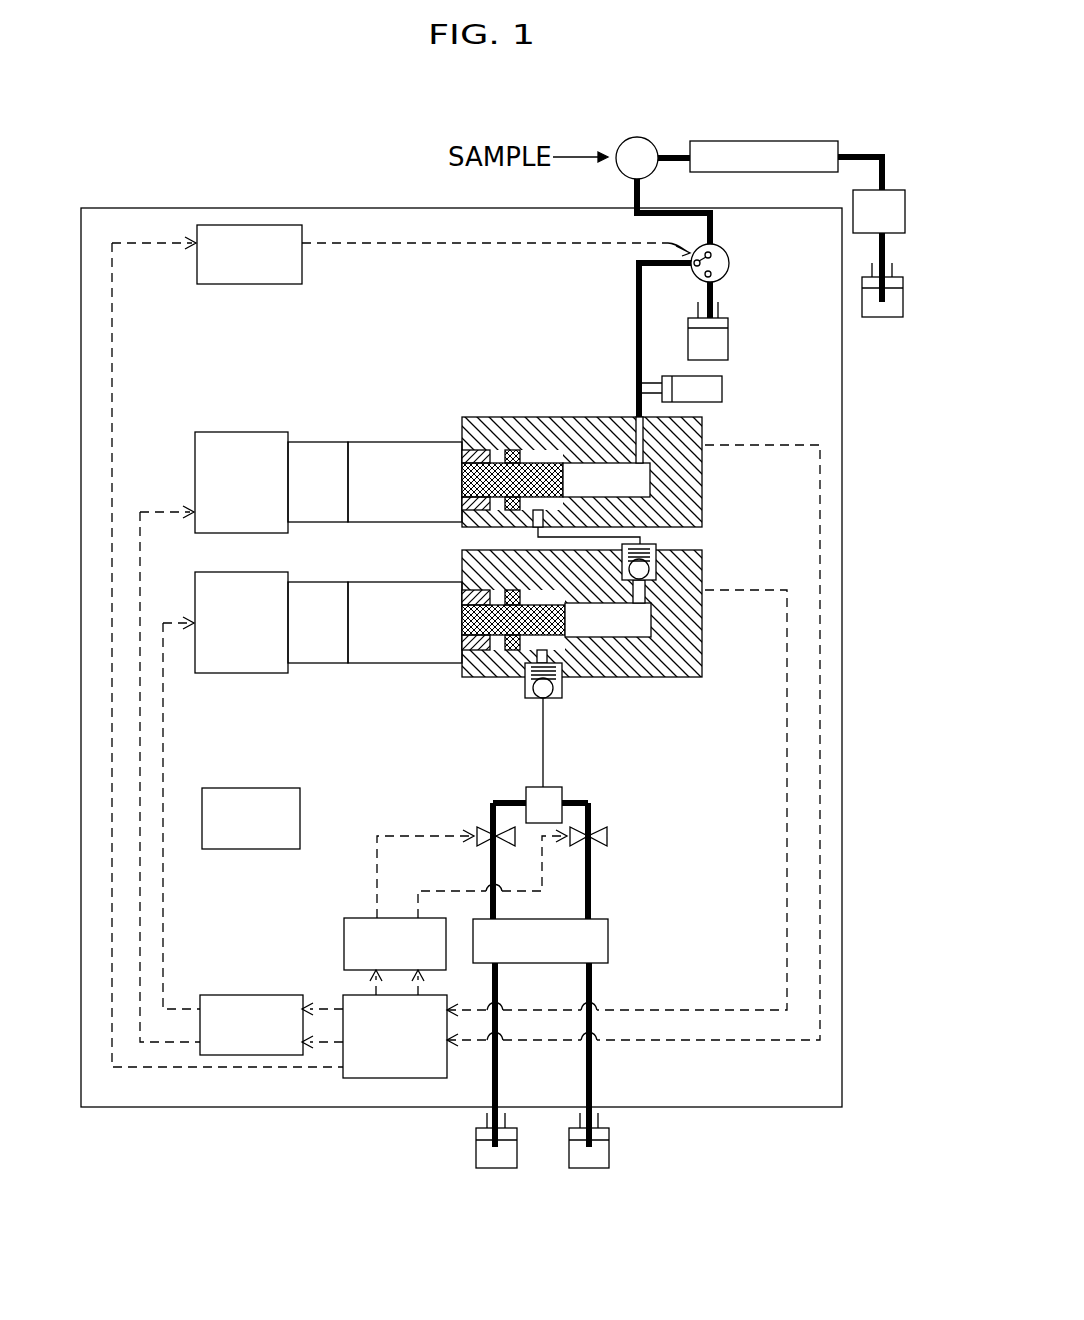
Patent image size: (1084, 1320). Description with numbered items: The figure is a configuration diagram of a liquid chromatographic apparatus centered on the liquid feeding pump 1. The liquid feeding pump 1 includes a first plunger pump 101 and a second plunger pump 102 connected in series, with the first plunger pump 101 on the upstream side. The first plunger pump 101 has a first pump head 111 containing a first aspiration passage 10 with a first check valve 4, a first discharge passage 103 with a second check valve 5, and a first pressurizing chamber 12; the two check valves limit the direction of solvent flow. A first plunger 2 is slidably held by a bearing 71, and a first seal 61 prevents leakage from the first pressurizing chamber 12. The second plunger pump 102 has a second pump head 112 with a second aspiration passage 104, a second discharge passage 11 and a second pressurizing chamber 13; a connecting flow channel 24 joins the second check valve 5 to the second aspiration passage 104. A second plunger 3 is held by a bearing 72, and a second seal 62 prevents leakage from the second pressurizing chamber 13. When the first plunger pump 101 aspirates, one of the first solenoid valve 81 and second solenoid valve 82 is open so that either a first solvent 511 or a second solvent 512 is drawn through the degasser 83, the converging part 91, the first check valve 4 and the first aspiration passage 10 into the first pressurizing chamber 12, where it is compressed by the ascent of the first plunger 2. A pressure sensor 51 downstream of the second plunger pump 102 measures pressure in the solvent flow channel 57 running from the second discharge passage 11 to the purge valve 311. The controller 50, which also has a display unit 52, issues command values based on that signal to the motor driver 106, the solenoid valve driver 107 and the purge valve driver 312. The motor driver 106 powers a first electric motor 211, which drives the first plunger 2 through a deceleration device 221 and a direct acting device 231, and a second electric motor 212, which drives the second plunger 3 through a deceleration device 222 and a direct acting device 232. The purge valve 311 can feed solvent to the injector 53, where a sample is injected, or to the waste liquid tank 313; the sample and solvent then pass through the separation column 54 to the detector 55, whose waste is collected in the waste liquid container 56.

The liquid feeding pump 1 is at (126, 214).
The injector 53 is at (637, 137).
The separation column 54 is at (762, 142).
The detector 55 is at (887, 208).
The waste liquid container 56 is at (882, 320).
The solvent flow channel 57 is at (634, 320).
The purge valve 311 is at (722, 268).
The purge valve driver 312 is at (229, 284).
The waste liquid tank 313 is at (728, 325).
The pressure sensor 51 is at (722, 390).
The display unit 52 is at (300, 818).
The bearing 72 is at (474, 449).
The second seal 62 is at (510, 449).
The second plunger 3 is at (581, 435).
The second discharge passage 11 is at (635, 440).
The second pump head 112 is at (462, 425).
The first pump head 111 is at (462, 570).
The second pressurizing chamber 13 is at (686, 490).
The second aspiration passage 104 is at (700, 517).
The connecting flow channel 24 is at (660, 538).
The second check valve 5 is at (660, 562).
The second plunger pump 102 is at (657, 435).
The first plunger pump 101 is at (657, 659).
The second electric motor 212 is at (247, 441).
The deceleration device 222 is at (321, 450).
The direct acting device 232 is at (383, 450).
The first electric motor 211 is at (246, 665).
The deceleration device 221 is at (321, 656).
The direct acting device 231 is at (380, 656).
The bearing 71 is at (462, 672).
The first seal 61 is at (492, 672).
The first aspiration passage 10 is at (562, 685).
The first plunger 2 is at (549, 638).
The first pressurizing chamber 12 is at (640, 678).
The first discharge passage 103 is at (700, 678).
The first check valve 4 is at (565, 700).
The converging part 91 is at (530, 800).
The first solenoid valve 81 is at (512, 840).
The second solenoid valve 82 is at (598, 841).
The degasser 83 is at (603, 938).
The solenoid valve driver 107 is at (345, 955).
The motor driver 106 is at (230, 996).
The controller 50 is at (348, 1000).
The first solvent 511 is at (512, 1162).
The second solvent 512 is at (605, 1162).